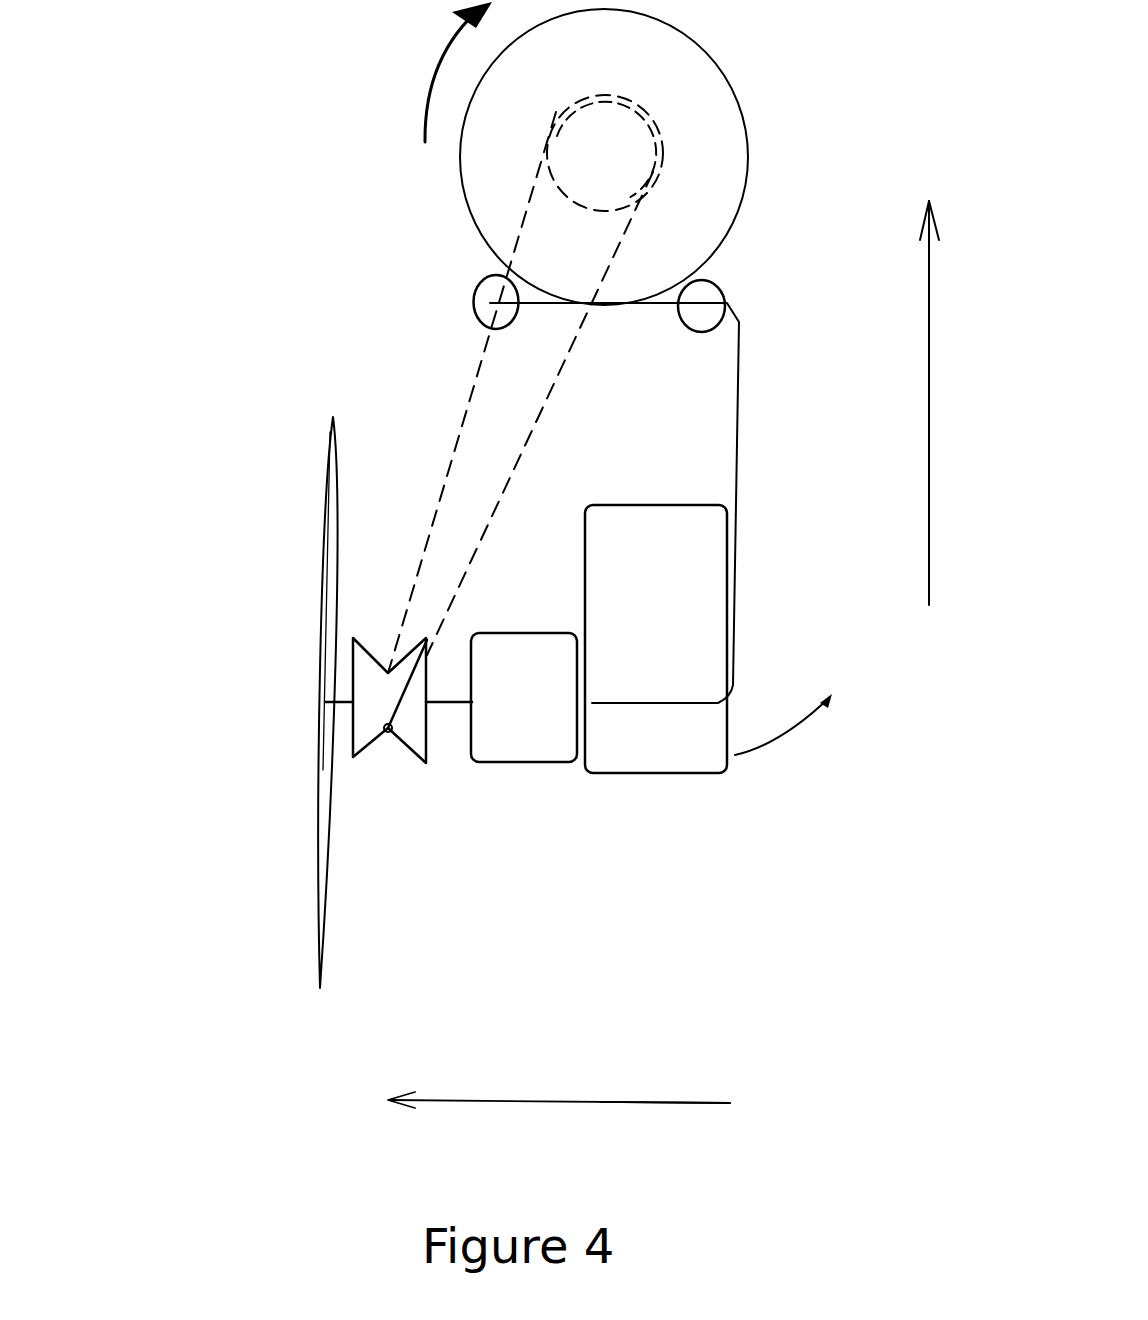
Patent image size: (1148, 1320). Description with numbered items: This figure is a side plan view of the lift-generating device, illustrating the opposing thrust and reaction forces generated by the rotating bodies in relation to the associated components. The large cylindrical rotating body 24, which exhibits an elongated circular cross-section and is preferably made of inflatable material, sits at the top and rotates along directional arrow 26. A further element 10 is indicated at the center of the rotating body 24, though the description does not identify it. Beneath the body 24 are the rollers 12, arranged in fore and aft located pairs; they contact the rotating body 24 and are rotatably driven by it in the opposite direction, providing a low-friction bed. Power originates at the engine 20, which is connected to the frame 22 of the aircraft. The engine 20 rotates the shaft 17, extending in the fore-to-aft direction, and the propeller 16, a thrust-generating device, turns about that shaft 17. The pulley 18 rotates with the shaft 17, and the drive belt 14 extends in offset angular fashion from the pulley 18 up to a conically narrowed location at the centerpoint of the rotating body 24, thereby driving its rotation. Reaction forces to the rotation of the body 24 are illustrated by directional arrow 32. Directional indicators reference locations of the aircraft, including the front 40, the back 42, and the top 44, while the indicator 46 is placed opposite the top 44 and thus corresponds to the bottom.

The drive shaft 10 is at (575, 163).
The rollers 12 is at (463, 305).
The drive belt 14 is at (443, 453).
The propeller 16 is at (322, 510).
The shaft 17 is at (340, 693).
The pulley 18 is at (347, 741).
The engine 20 is at (513, 765).
The frame 22 is at (732, 390).
The rotating bodies 24 is at (465, 218).
The directional arrow 26 is at (413, 82).
The directional arrow 32 is at (785, 755).
The front 40 is at (516, 1102).
The back 42 is at (702, 1102).
The top 44 is at (926, 371).
The downward direction 46 is at (843, 695).